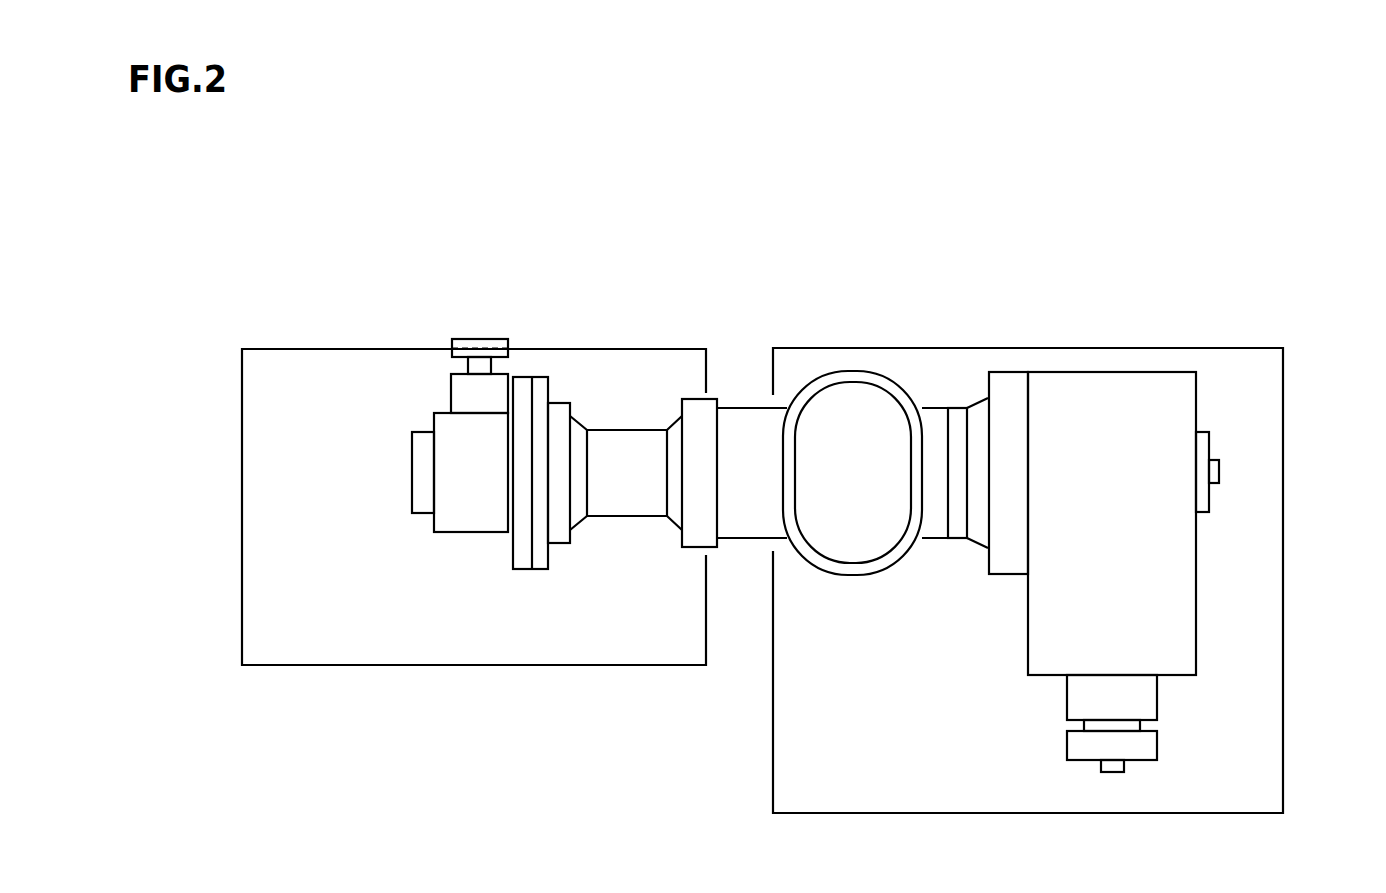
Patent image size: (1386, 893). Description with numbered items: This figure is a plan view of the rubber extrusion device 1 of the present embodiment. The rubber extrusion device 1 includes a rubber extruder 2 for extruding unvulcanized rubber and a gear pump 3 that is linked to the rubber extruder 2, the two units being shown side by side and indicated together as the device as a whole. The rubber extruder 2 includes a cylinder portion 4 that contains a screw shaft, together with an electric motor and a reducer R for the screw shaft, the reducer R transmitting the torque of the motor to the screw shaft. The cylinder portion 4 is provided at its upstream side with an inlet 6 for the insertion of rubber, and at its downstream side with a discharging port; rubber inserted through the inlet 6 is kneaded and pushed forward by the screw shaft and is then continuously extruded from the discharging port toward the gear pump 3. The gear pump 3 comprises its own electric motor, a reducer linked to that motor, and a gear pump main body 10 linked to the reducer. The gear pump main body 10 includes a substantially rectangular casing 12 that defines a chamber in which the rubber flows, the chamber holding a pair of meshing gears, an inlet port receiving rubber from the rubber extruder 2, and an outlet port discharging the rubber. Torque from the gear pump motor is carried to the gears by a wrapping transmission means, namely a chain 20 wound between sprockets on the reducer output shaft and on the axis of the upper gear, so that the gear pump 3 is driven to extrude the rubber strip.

The rubber extrusion device 1 is at (824, 205).
The rubber extruder 2 is at (1048, 311).
The gear pump 3 is at (549, 308).
The cylinder portion 4 is at (748, 427).
The inlet 6 is at (868, 406).
The gear pump main body 10 is at (407, 409).
The casing 12 is at (448, 458).
The chain 20 is at (470, 340).
The reducer R is at (1167, 389).